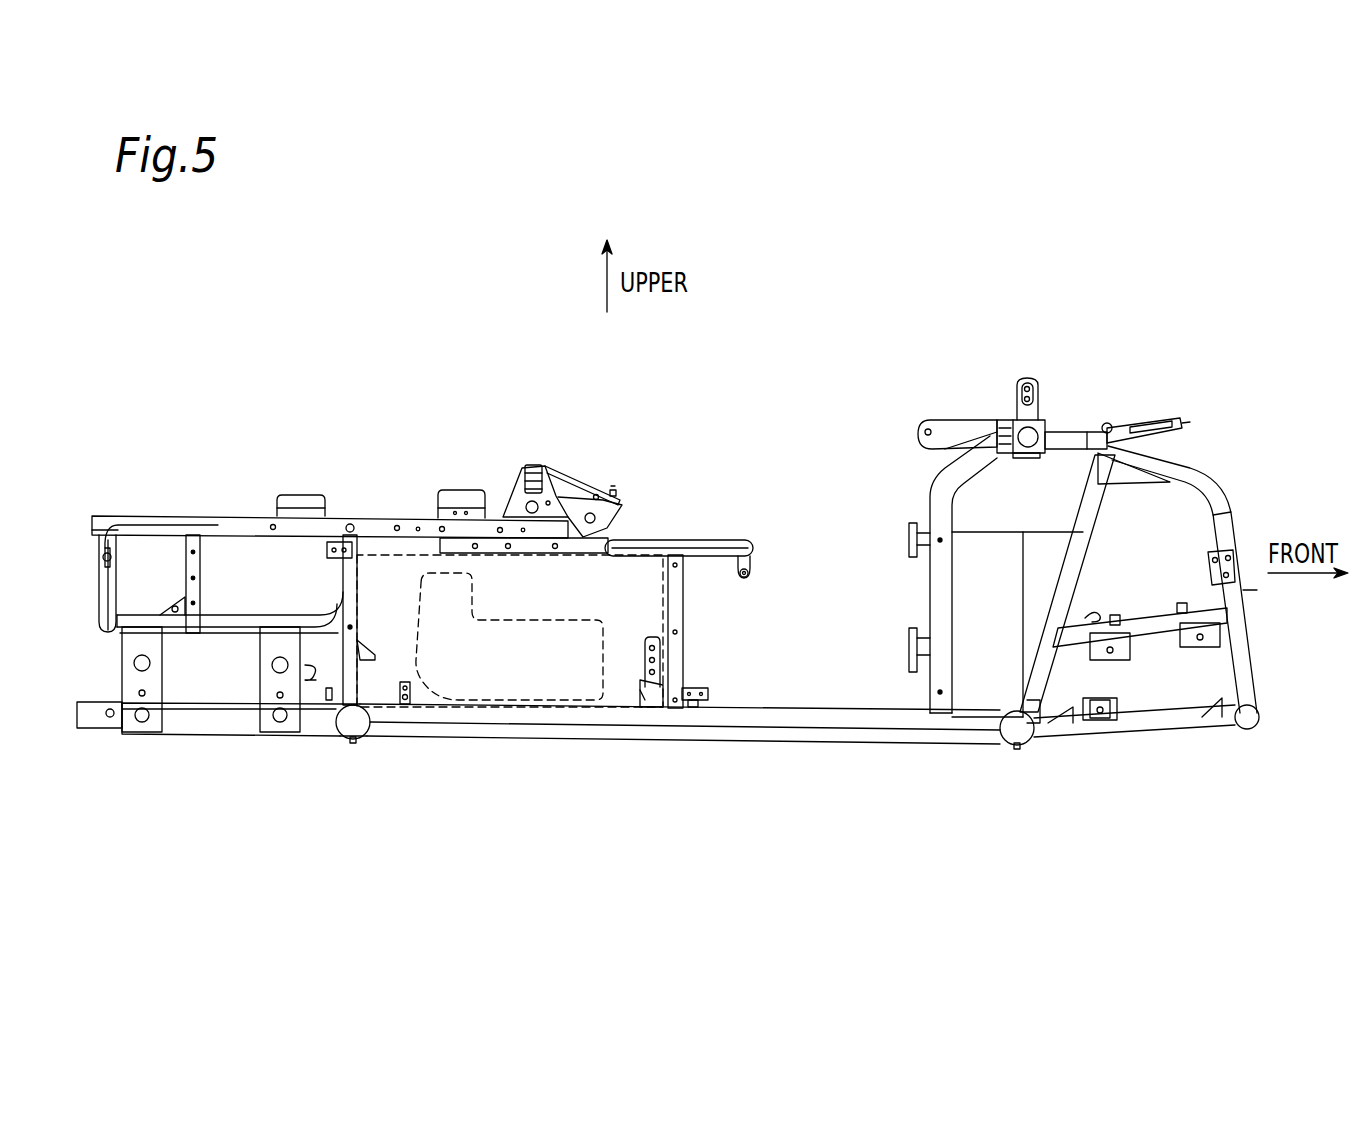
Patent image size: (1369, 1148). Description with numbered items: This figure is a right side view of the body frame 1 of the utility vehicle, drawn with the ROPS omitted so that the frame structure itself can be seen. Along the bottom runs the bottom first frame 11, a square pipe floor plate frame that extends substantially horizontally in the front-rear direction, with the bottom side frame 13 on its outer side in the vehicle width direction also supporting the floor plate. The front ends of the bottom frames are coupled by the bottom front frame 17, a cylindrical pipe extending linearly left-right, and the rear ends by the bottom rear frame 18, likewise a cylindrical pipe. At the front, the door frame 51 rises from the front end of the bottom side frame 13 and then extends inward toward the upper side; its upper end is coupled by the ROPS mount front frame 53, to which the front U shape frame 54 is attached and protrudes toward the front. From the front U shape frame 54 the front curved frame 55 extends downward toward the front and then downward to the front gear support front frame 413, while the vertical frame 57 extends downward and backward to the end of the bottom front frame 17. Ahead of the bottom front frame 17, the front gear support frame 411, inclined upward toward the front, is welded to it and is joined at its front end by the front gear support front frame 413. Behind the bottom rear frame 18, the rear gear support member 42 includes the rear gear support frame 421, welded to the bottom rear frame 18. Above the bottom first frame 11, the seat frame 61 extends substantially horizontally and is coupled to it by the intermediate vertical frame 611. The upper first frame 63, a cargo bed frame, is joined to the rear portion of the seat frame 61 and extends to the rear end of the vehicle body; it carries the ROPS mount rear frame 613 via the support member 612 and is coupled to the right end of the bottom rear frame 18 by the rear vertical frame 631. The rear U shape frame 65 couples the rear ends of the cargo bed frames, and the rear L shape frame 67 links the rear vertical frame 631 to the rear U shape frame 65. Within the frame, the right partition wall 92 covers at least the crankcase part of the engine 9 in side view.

The body frame 1 is at (1142, 366).
The engine 9 is at (525, 658).
The bottom first frame 11 is at (402, 717).
The bottom side frame 13 is at (599, 717).
The bottom front frame 17 is at (1019, 746).
The bottom rear frame 18 is at (354, 740).
The rear gear support member 42 is at (168, 750).
The door frame 51 is at (940, 645).
The ROPS mount front frame 53 is at (1003, 420).
The front U shape frame 54 is at (1072, 433).
The front curved frame 55 is at (1220, 497).
The vertical frame 57 is at (1073, 583).
The seat frame 61 is at (658, 540).
The upper first frame 63 is at (378, 520).
The rear U shape frame 65 is at (103, 595).
The rear L shape frame 67 is at (242, 623).
The right partition wall 92 is at (613, 583).
The front gear support frame 411 is at (1152, 722).
The front gear support front frame 413 is at (1255, 730).
The rear gear support frame 421 is at (213, 716).
The intermediate vertical frame 611 is at (677, 650).
The support member 612 is at (518, 490).
The ROPS mount rear frame 613 is at (535, 467).
The rear vertical frame 631 is at (353, 603).